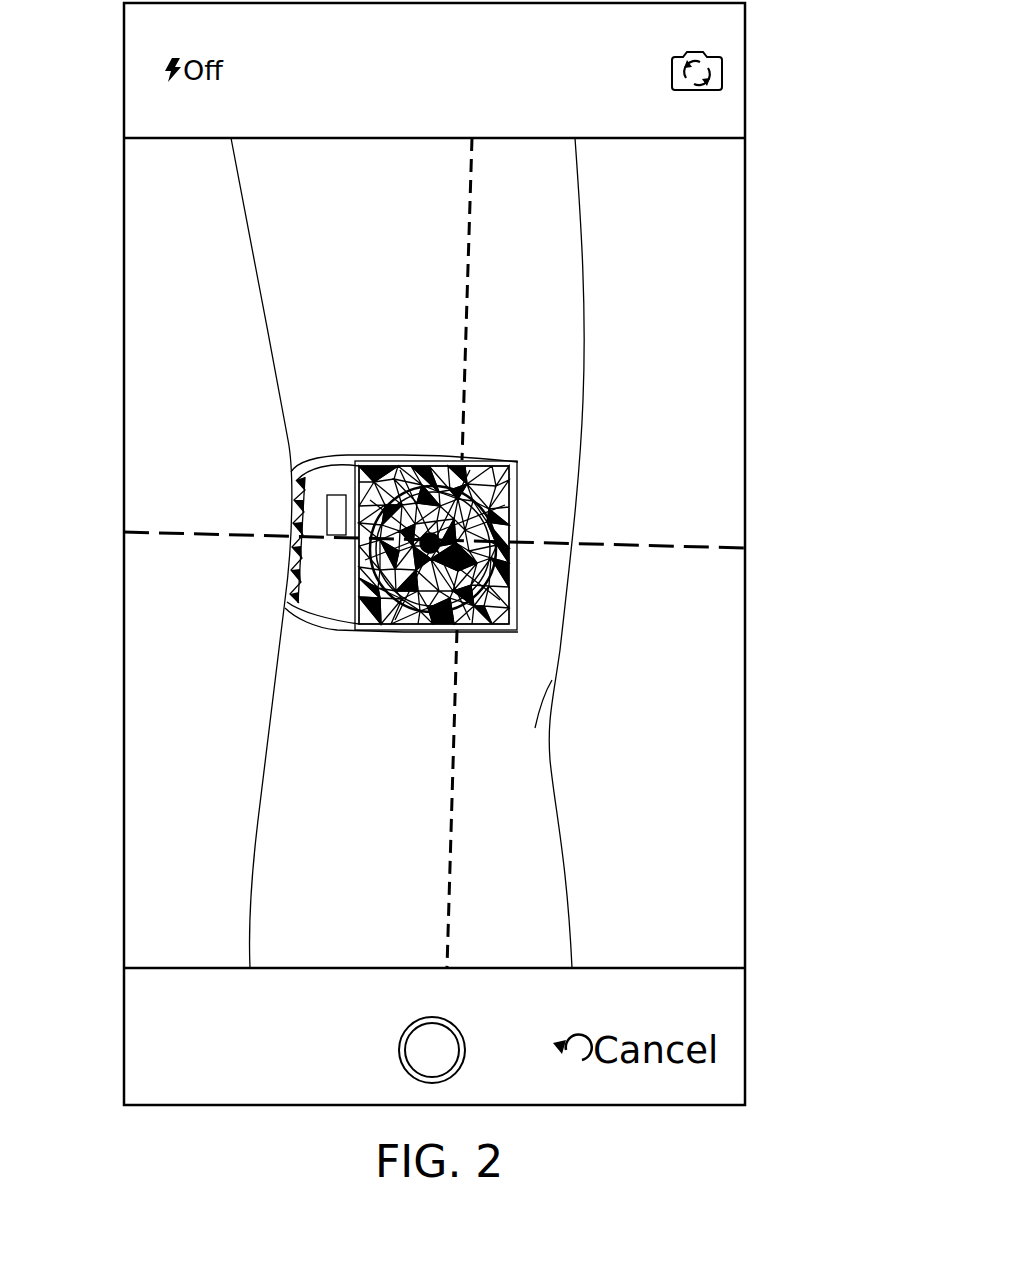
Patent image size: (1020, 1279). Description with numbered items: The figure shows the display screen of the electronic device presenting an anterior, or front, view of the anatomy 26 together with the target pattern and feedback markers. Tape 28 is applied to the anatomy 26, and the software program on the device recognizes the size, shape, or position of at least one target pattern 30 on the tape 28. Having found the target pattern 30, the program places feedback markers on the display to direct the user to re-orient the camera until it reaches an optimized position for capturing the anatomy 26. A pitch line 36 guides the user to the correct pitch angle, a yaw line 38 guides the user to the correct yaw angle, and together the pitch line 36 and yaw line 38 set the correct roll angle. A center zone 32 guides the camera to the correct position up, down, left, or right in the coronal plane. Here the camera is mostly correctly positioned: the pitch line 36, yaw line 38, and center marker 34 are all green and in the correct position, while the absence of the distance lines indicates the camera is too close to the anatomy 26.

The anatomical information 26 is at (290, 262).
The tape 28 is at (318, 452).
The target pattern 30 is at (404, 472).
The center zone 32 is at (500, 495).
The center marker 34 is at (400, 558).
The pitch line 36 is at (662, 550).
The yaw line 38 is at (453, 778).